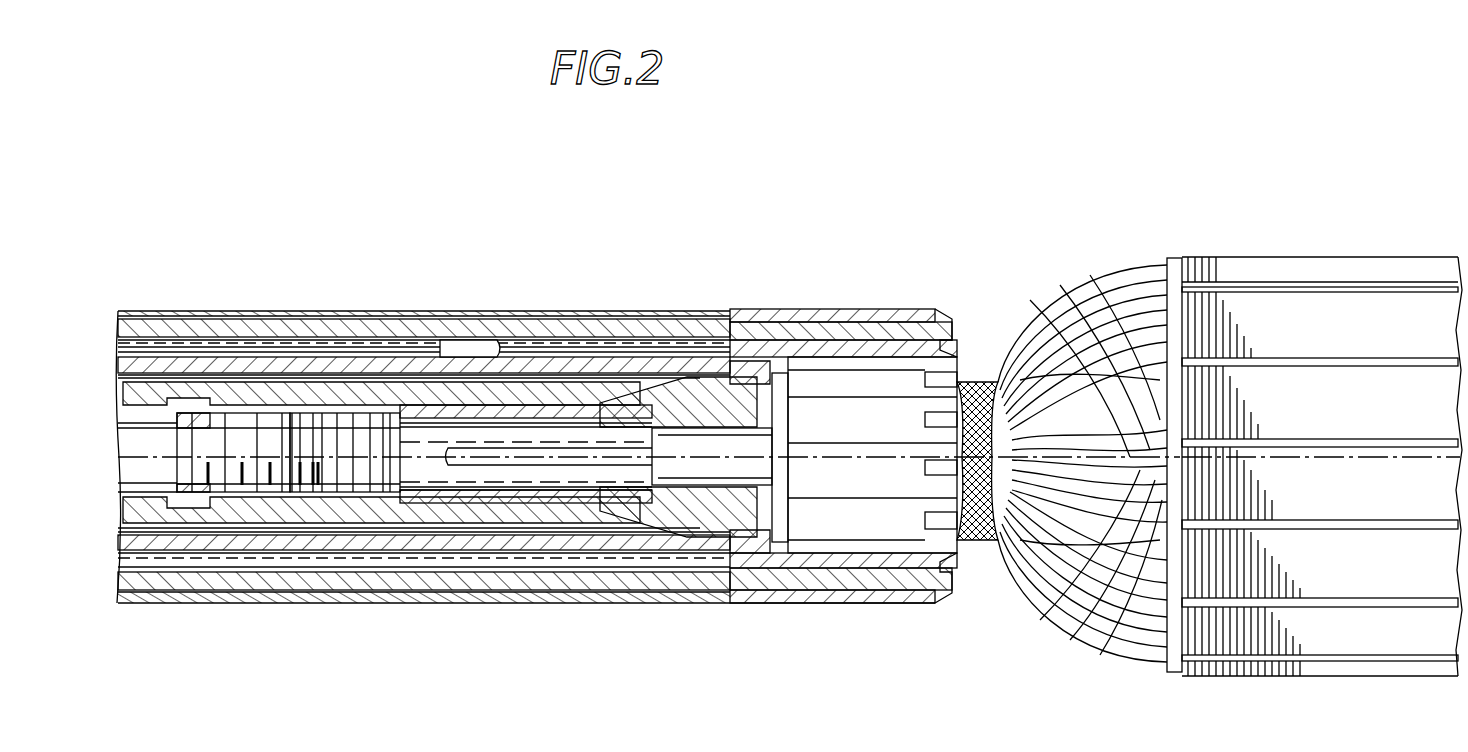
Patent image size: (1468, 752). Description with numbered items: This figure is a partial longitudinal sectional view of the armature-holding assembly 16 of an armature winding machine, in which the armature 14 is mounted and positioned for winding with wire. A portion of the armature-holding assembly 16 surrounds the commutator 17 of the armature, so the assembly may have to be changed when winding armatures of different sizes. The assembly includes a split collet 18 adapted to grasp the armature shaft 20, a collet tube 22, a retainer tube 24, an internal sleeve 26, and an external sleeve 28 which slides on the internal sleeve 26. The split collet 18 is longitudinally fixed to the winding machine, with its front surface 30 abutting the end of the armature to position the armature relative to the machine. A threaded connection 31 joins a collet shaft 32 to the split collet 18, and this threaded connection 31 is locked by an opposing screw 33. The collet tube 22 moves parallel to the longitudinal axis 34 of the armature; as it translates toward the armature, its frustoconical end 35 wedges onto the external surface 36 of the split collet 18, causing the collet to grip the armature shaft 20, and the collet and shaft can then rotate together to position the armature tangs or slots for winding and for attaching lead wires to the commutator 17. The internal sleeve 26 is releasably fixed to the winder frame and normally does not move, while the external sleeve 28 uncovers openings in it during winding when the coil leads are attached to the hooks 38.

The armature 14 is at (1322, 640).
The armature-holding assembly 16 is at (300, 263).
The commutator 17 is at (873, 535).
The split collet 18 is at (545, 503).
The armature shaft 20 is at (686, 483).
The collet tube 22 is at (473, 384).
The retainer tube 24 is at (873, 347).
The internal sleeve 26 is at (795, 330).
The external sleeve 28 is at (744, 311).
The front surface 30 is at (742, 396).
The threaded connection 31 is at (262, 427).
The collet shaft 32 is at (138, 483).
The opposing screw 33 is at (303, 428).
The longitudinal axis 34 is at (1430, 459).
The frustoconical end 35 is at (757, 522).
The external surface 36 is at (806, 503).
The hooks 38 is at (960, 347).